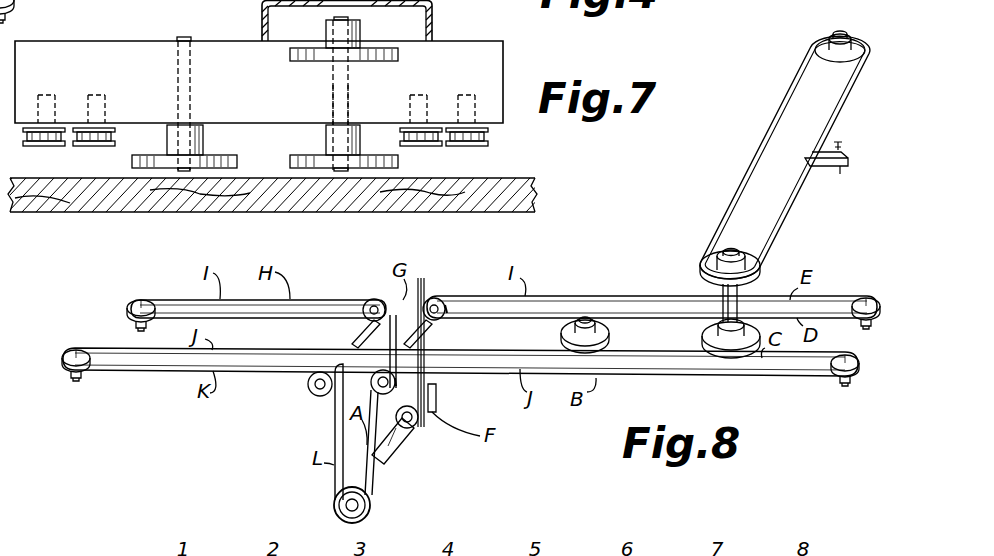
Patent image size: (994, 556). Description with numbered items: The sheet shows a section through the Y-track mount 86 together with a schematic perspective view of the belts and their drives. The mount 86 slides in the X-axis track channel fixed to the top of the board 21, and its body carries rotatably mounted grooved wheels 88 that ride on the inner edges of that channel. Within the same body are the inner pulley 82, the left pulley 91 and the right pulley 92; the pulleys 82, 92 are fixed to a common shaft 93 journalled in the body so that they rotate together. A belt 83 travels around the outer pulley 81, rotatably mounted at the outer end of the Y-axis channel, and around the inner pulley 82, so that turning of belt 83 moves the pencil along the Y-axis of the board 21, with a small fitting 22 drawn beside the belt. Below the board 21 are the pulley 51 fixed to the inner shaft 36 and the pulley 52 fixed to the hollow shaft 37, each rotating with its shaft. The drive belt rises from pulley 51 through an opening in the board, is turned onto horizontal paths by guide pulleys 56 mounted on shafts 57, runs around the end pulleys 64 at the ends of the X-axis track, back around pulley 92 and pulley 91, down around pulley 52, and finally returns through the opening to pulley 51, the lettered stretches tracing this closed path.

In FIG. 7, the board 21 is at (60, 212).
In FIG. 8, the bracket 22 is at (840, 174).
In FIG. 8, the inner shaft 36 is at (432, 400).
In FIG. 8, the hollow shaft 37 is at (404, 457).
In FIG. 8, the pulley 51 is at (370, 503).
In FIG. 8, the pulley 52 is at (418, 423).
In FIG. 8, the guide pulleys 56 is at (368, 302).
In FIG. 8, the shafts 57 is at (357, 340).
In FIG. 8, the end pulleys 64 is at (140, 300).
In FIG. 8, the outer pulley 81 is at (828, 44).
In FIG. 8, the inner pulley 82 is at (708, 260).
In FIG. 8, the belt 83 is at (732, 216).
In FIG. 7, the Y-track mount 86 is at (252, 25).
In FIG. 7, the grooved wheels 88 is at (84, 147).
In FIG. 7, the left pulley 91 is at (222, 136).
In FIG. 8, the left pulley 91 is at (604, 346).
In FIG. 7, the right pulley 92 is at (312, 158).
In FIG. 8, the right pulley 92 is at (708, 336).
In FIG. 7, the common shaft 93 is at (332, 107).
In FIG. 8, the common shaft 93 is at (722, 300).